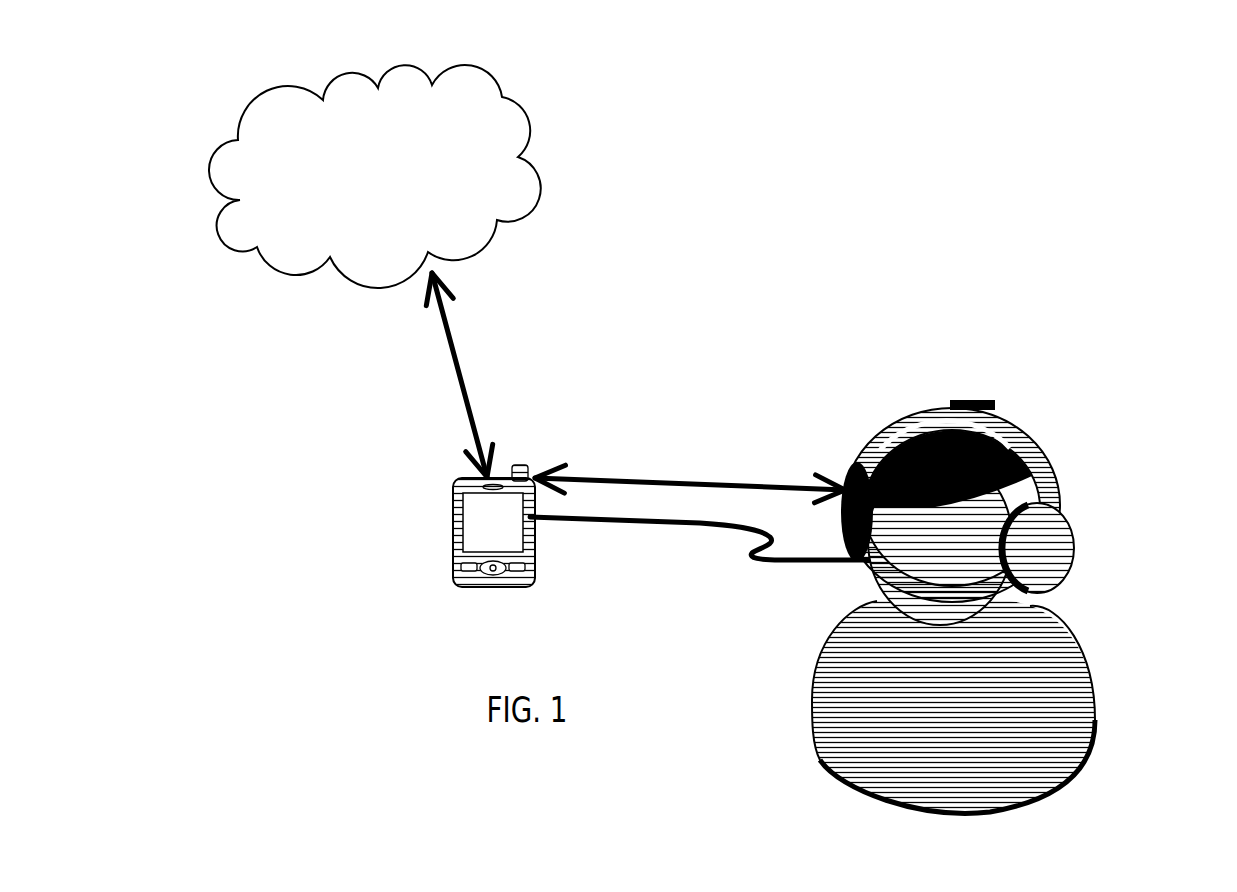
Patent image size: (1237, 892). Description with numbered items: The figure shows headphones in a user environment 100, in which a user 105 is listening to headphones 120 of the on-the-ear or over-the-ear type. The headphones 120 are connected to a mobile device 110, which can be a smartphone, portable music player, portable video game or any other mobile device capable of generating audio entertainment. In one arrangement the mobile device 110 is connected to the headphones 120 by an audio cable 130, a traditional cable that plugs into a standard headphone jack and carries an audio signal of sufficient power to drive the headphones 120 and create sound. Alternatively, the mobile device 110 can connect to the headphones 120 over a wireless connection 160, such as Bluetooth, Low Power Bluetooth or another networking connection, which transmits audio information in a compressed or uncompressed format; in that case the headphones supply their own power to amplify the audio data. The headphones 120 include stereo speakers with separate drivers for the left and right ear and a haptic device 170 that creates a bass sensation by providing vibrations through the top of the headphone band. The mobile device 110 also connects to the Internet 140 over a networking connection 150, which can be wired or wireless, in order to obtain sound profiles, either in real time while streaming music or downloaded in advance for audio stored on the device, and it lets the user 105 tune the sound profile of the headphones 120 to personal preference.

The user environment 100 is at (1009, 536).
The user 105 is at (1105, 673).
The mobile device 110 is at (455, 475).
The headphones 120 is at (1042, 468).
The audio cable 130 is at (698, 528).
The Internet 140 is at (537, 157).
The networking connection 150 is at (488, 353).
The wireless connection 160 is at (657, 460).
The haptic device 170 is at (995, 398).